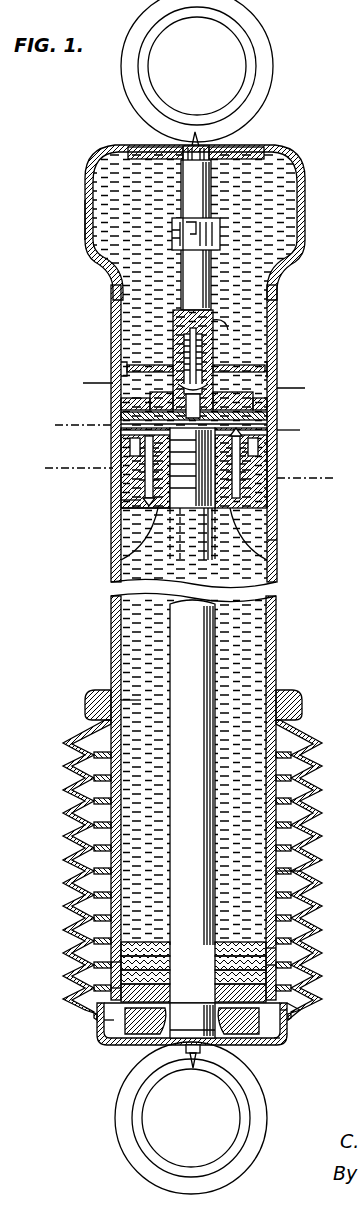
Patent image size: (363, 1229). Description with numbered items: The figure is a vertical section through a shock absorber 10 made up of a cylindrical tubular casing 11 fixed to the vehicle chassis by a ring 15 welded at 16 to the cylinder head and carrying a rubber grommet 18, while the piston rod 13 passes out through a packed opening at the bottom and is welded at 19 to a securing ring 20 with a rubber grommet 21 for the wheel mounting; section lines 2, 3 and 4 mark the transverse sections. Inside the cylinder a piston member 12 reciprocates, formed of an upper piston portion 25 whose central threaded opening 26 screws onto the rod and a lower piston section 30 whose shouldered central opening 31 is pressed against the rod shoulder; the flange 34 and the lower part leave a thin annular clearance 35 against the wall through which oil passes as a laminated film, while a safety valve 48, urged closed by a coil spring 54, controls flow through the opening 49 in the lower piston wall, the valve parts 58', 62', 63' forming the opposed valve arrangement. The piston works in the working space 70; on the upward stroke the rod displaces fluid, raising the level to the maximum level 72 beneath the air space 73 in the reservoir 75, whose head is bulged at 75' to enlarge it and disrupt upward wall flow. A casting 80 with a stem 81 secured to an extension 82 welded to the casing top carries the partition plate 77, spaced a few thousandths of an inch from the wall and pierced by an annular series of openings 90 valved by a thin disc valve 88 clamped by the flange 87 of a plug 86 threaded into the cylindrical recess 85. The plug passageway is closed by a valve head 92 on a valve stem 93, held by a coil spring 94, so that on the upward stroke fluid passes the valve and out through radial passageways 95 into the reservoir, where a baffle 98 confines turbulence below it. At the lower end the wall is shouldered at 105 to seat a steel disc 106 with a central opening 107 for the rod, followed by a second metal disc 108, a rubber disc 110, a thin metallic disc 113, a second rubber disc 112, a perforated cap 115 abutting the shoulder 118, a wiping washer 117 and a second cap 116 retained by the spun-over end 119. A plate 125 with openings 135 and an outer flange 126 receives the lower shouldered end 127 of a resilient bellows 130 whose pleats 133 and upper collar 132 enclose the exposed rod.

The section line 2- 2 is at (64, 424).
The section line 3- 3 is at (63, 470).
The section line 4- 4 is at (90, 382).
The shock absorber 10 is at (282, 308).
The cylindrical tubular casing 11 is at (112, 614).
The piston member 12 is at (120, 510).
The piston rod 13 is at (205, 690).
The ring 15 is at (262, 100).
The weld 16 is at (232, 150).
The grommet 18 is at (255, 58).
The weld 19 is at (190, 1055).
The securing ring 20 is at (120, 1143).
The rubber grommet 21 is at (250, 1147).
The upper piston portion 25 is at (275, 443).
The central threaded opening 26 is at (128, 440).
The lower piston section 30 is at (176, 528).
The shouldered central opening 31 is at (115, 585).
The flange 34 is at (280, 452).
The annular clearance 35 is at (277, 484).
The safety valve 48 is at (128, 492).
The opening 49 is at (120, 530).
The coil spring 54 is at (128, 480).
The plate 58' is at (234, 399).
The cylinder wall 62' is at (298, 555).
The passage 63' is at (274, 527).
The working space 70 is at (145, 684).
The maximum fluid level 72 is at (135, 152).
The air space 73 is at (290, 165).
The reservoir 75 is at (177, 222).
The bulged head portion 75' is at (59, 220).
The partition plate 77 is at (135, 404).
The casting 80 is at (216, 292).
The stem 81 is at (181, 290).
The extension 82 is at (190, 216).
The cylindrical recess 85 is at (215, 358).
The plug 86 is at (160, 404).
The flange 87 is at (125, 430).
The disc valve 88 is at (128, 420).
The openings 90 is at (228, 404).
The valve head 92 is at (222, 376).
The valve stem 93 is at (180, 325).
The coil spring 94 is at (190, 355).
The radial passageways 95 is at (148, 370).
The baffle 98 is at (277, 366).
The shoulder 105 is at (82, 945).
The steel disc 106 is at (150, 940).
The central opening 107 is at (168, 950).
The second metal disc 108 is at (178, 928).
The rubber disc 110 is at (92, 962).
The second rubber disc 112 is at (110, 988).
The thin metallic disc 113 is at (300, 950).
The perforated cap 115 is at (115, 1005).
The second cap 116 is at (110, 1040).
The wiping washer 117 is at (285, 1010).
The shoulder 118 is at (292, 960).
The spun-over end 119 is at (283, 1020).
The plate 125 is at (208, 1082).
The outer flange 126 is at (287, 1045).
The lower shouldered end 127 is at (122, 1045).
The resilient bellows 130 is at (72, 818).
The collar 132 is at (300, 703).
The pleats 133 is at (300, 882).
The openings 135 is at (130, 1060).